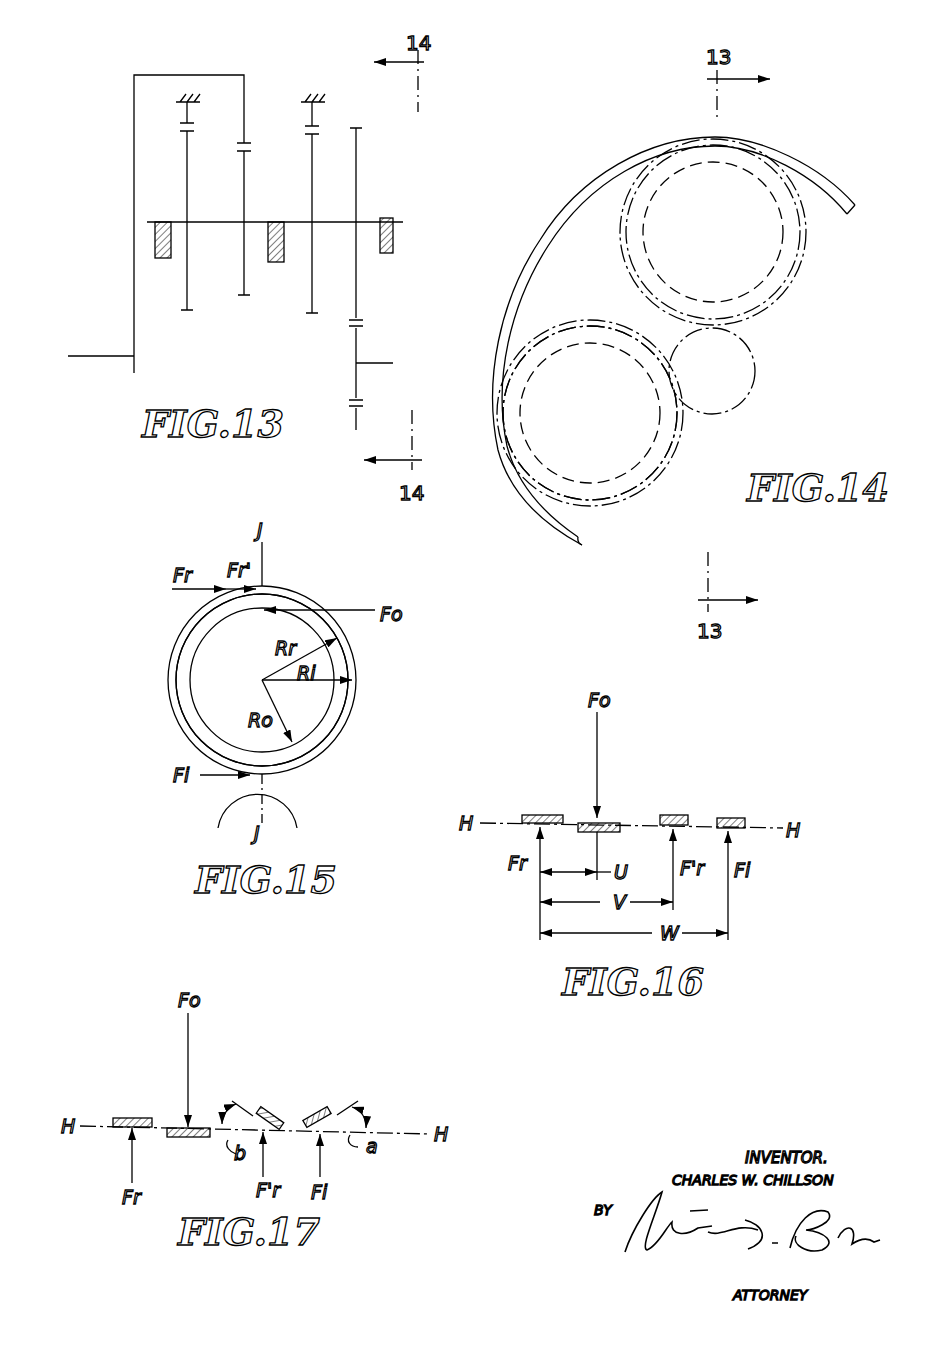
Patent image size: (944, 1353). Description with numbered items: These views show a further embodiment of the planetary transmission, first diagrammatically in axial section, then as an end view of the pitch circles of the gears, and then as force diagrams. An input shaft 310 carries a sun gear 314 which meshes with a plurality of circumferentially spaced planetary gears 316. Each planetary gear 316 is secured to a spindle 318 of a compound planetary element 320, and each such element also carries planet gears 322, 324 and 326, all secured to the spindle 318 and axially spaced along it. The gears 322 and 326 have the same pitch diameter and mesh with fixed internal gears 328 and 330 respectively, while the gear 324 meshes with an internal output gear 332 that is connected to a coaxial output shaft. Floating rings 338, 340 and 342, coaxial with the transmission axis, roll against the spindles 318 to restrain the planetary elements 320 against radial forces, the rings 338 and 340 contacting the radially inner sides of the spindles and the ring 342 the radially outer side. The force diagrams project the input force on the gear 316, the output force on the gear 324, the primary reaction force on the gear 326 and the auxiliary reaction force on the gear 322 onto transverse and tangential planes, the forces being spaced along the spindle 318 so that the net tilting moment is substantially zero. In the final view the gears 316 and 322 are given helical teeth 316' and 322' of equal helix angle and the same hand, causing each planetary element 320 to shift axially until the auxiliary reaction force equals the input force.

In FIG. 13, the input shaft 310 is at (393, 366).
In FIG. 13, the sun gear 314 is at (356, 346).
In FIG. 14, the sun gear 314 is at (727, 383).
In FIG. 15, the sun gear 314 is at (293, 798).
In FIG. 13, the planetary gear 316 is at (382, 279).
In FIG. 14, the planetary gear 316 is at (606, 413).
In FIG. 15, the planetary gear 316 is at (280, 680).
In FIG. 16, the planetary gear 316 is at (747, 810).
In FIG. 17, the helical teeth 316' is at (332, 1097).
In FIG. 13, the spindle 318 is at (266, 218).
In FIG. 13, the compound planetary element 320 is at (378, 206).
In FIG. 13, the planet gear 322 is at (290, 203).
In FIG. 14, the planet gear 322 is at (590, 379).
In FIG. 15, the planet gear 322 is at (291, 680).
In FIG. 16, the planet gear 322 is at (685, 802).
In FIG. 17, the helical teeth 322' is at (277, 1102).
In FIG. 13, the planet gear 324 is at (244, 188).
In FIG. 14, the planet gear 324 is at (652, 268).
In FIG. 15, the planet gear 324 is at (315, 727).
In FIG. 16, the planet gear 324 is at (618, 823).
In FIG. 17, the planet gear 324 is at (197, 1137).
In FIG. 13, the planet gear 326 is at (182, 168).
In FIG. 14, the planet gear 326 is at (608, 320).
In FIG. 15, the planet gear 326 is at (291, 680).
In FIG. 16, the planet gear 326 is at (546, 815).
In FIG. 17, the planet gear 326 is at (135, 1118).
In FIG. 13, the fixed internal gear 328 is at (314, 118).
In FIG. 14, the fixed internal gear 328 is at (621, 122).
In FIG. 13, the fixed internal gear 330 is at (189, 120).
In FIG. 14, the fixed internal gear 330 is at (630, 160).
In FIG. 13, the internal output gear 332 is at (244, 108).
In FIG. 14, the internal output gear 332 is at (552, 237).
In FIG. 13, the floating ring 338 is at (161, 258).
In FIG. 13, the floating ring 340 is at (278, 264).
In FIG. 13, the floating ring 342 is at (393, 244).